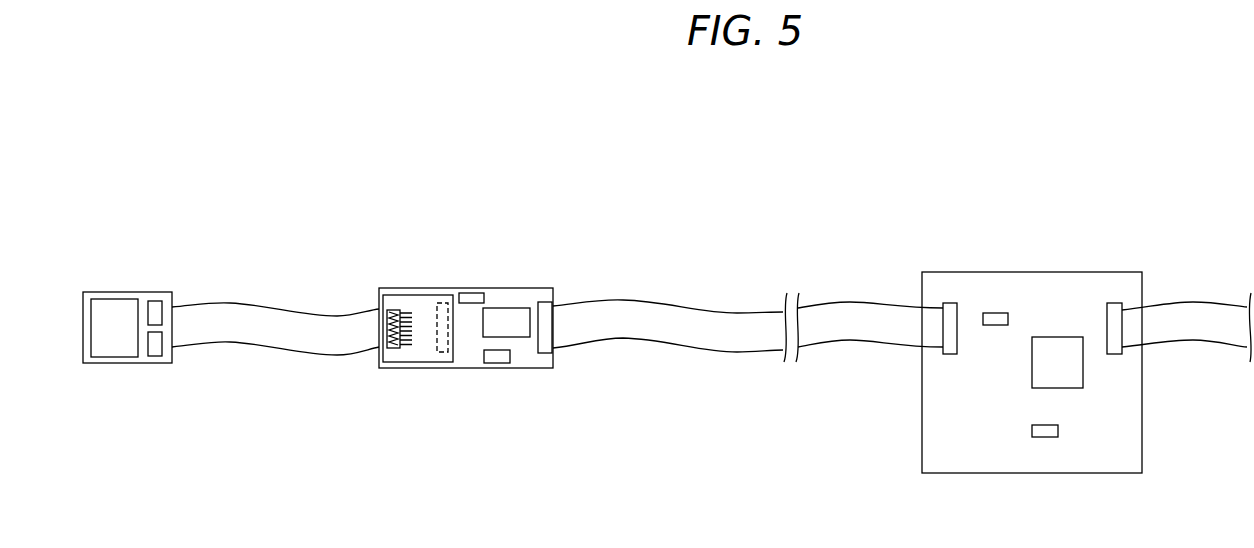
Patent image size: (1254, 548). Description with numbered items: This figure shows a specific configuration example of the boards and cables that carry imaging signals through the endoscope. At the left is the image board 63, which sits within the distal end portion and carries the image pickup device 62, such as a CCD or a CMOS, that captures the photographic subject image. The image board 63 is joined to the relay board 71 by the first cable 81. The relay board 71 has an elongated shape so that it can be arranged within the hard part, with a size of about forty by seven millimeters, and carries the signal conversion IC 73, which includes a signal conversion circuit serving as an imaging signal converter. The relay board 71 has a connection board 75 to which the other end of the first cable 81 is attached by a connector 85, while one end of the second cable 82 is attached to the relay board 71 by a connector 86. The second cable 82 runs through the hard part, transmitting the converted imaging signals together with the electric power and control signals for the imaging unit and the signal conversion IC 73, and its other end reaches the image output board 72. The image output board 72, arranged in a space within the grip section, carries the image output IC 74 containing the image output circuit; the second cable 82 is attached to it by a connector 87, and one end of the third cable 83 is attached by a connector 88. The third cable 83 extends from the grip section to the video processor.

The image pickup device 62 is at (117, 343).
The image board 63 is at (130, 292).
The relay board 71 is at (492, 288).
The image output board 72 is at (1044, 272).
The signal conversion IC 73 is at (515, 318).
The image output IC 74 is at (1073, 378).
The connection board 75 is at (422, 307).
The first cable 81 is at (257, 306).
The second cable 82 is at (692, 308).
The third cable 83 is at (1190, 313).
The connector 85 is at (437, 343).
The connector 86 is at (545, 353).
The connector 87 is at (950, 303).
The connector 88 is at (1113, 303).